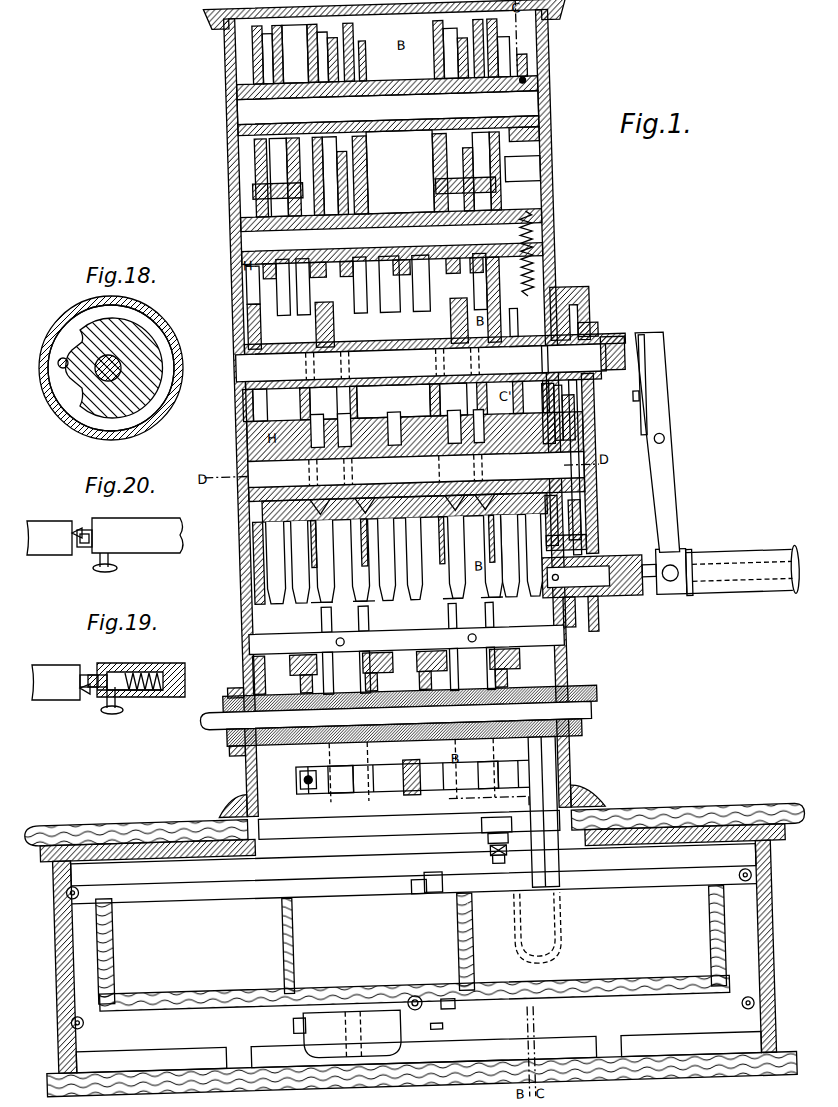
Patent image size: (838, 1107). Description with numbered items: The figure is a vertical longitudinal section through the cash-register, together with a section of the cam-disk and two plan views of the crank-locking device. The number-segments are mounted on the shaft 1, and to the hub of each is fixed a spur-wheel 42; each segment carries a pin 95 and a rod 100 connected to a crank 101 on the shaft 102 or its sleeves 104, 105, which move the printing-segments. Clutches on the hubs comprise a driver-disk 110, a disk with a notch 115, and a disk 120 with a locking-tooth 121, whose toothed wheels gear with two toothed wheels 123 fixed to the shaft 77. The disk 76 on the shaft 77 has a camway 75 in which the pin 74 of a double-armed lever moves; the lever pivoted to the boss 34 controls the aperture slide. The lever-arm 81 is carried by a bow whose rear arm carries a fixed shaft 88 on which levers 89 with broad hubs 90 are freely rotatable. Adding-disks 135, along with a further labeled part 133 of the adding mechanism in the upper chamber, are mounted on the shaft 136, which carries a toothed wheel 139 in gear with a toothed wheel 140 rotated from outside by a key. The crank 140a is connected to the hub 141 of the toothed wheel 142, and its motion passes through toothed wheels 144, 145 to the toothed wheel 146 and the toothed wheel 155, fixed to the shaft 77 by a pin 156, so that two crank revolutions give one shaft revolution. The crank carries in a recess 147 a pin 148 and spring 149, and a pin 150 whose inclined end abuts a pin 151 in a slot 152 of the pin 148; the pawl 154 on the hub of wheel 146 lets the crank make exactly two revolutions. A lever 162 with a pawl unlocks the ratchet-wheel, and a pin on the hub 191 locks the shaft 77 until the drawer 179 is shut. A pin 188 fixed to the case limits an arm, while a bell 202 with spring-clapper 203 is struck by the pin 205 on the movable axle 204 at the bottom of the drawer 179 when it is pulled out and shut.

In FIG. 1, the shaft 1 is at (416, 470).
In FIG. 1, the boss 34 is at (533, 548).
In FIG. 1, the spur-wheel 42 is at (275, 514).
In FIG. 18, the pin 74 is at (57, 364).
In FIG. 18, the camway 75 is at (122, 310).
In FIG. 1, the disk 76 is at (240, 340).
In FIG. 18, the disk 76 is at (160, 345).
In FIG. 1, the shaft 77 is at (421, 363).
In FIG. 18, the shaft 77 is at (108, 368).
In FIG. 1, the lever-arm 81 is at (402, 795).
In FIG. 1, the shaft 88 is at (290, 790).
In FIG. 1, the levers 89 is at (360, 752).
In FIG. 1, the hubs 90 is at (332, 792).
In FIG. 1, the pin 95 is at (350, 608).
In FIG. 1, the rod 100 is at (525, 260).
In FIG. 1, the crank 101 is at (507, 322).
In FIG. 1, the shaft 102 is at (222, 736).
In FIG. 1, the sleeve 104 is at (218, 712).
In FIG. 1, the sleeve 105 is at (226, 690).
In FIG. 1, the driver-disk 110 is at (313, 563).
In FIG. 1, the notch 115 is at (292, 528).
In FIG. 1, the disk 120 is at (318, 546).
In FIG. 1, the locking-tooth 121 is at (316, 548).
In FIG. 1, the toothed wheels 123 is at (330, 306).
In FIG. 1, the cylinder 133 is at (280, 30).
In FIG. 1, the adding-disks 135 is at (510, 40).
In FIG. 1, the shaft 136 is at (545, 106).
In FIG. 1, the toothed wheel 139 is at (540, 84).
In FIG. 1, the toothed wheel 140 is at (550, 160).
In FIG. 1, the crank 140a is at (670, 472).
In FIG. 1, the hub 141 is at (618, 343).
In FIG. 1, the toothed wheel 142 is at (585, 334).
In FIG. 1, the toothed wheel 144 is at (577, 430).
In FIG. 1, the toothed wheel 145 is at (580, 416).
In FIG. 1, the toothed wheel 146 is at (585, 547).
In FIG. 19, the recess 147 is at (168, 658).
In FIG. 1, the pin 148 is at (645, 586).
In FIG. 20, the pin 148 is at (84, 548).
In FIG. 19, the pin 148 is at (130, 670).
In FIG. 19, the spring 149 is at (150, 698).
In FIG. 1, the pin 150 is at (676, 566).
In FIG. 19, the pin 150 is at (112, 714).
In FIG. 19, the pin 151 is at (108, 708).
In FIG. 19, the slot 152 is at (98, 672).
In FIG. 20, the pawl 154 is at (80, 528).
In FIG. 19, the pawl 154 is at (86, 696).
In FIG. 1, the toothed wheel 155 is at (570, 300).
In FIG. 20, the toothed wheel 155 is at (42, 555).
In FIG. 19, the toothed wheel 155 is at (48, 668).
In FIG. 1, the pin 156 is at (551, 360).
In FIG. 1, the lever 162 is at (521, 417).
In FIG. 1, the drawer 179 is at (378, 1015).
In FIG. 1, the pin 188 is at (480, 866).
In FIG. 1, the hub 191 is at (556, 608).
In FIG. 1, the bell 202 is at (352, 1034).
In FIG. 1, the spring-clapper 203 is at (400, 1010).
In FIG. 1, the movable axle 204 is at (402, 996).
In FIG. 1, the pin 205 is at (424, 1028).